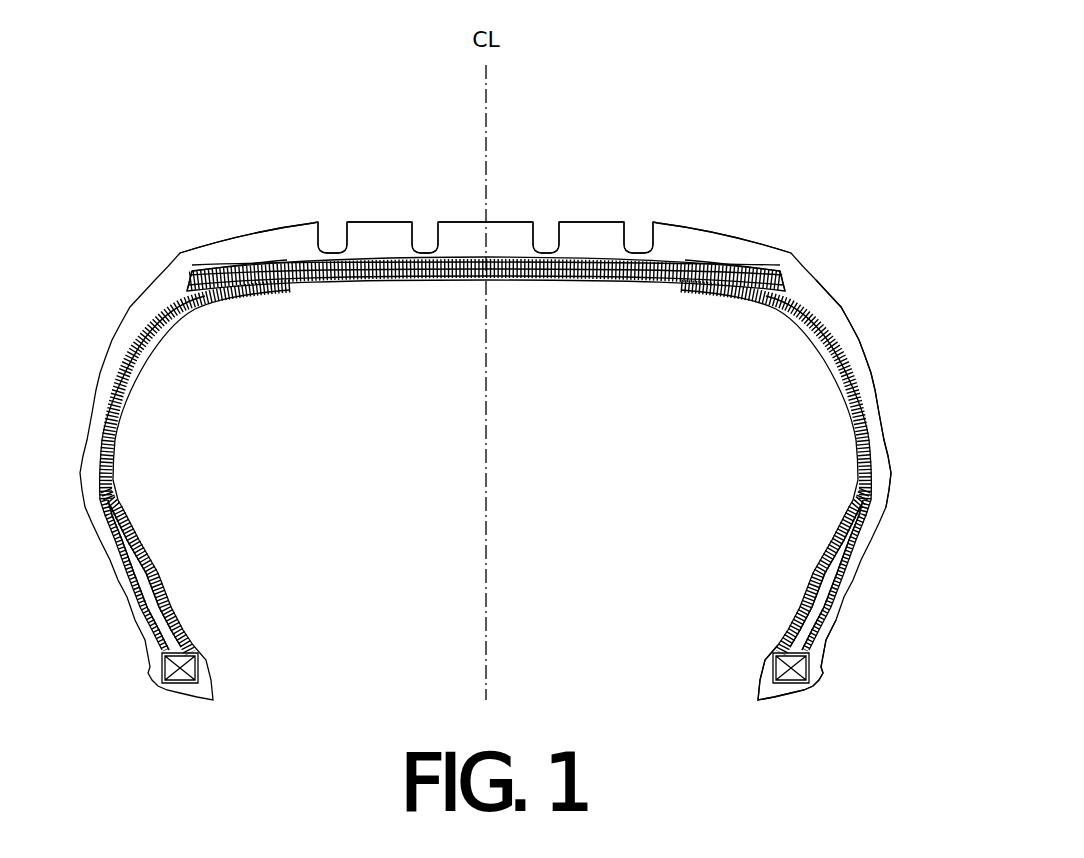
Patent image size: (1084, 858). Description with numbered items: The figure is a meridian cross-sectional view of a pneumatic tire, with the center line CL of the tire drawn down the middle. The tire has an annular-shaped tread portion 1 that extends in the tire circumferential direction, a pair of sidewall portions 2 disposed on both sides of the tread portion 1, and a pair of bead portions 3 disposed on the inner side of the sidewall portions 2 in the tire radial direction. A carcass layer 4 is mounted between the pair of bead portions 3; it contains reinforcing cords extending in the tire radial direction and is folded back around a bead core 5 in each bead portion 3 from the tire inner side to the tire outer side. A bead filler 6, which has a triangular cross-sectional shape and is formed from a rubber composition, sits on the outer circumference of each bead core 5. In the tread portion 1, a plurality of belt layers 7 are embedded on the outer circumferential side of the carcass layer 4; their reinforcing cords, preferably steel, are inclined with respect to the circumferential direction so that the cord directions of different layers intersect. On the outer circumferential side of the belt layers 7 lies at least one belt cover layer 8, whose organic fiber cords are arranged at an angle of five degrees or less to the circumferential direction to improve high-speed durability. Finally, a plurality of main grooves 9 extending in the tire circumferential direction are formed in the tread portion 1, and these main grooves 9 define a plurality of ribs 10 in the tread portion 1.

The tread portion 1 is at (494, 220).
The sidewall portion 2 is at (875, 400).
The bead portion 3 is at (823, 662).
The carcass layer 4 is at (827, 337).
The bead core 5 is at (200, 664).
The bead filler 6 is at (174, 633).
The belt layer 7 is at (650, 283).
The belt cover layer 8 is at (252, 266).
The main groove 9 is at (346, 218).
The rib 10 is at (295, 224).